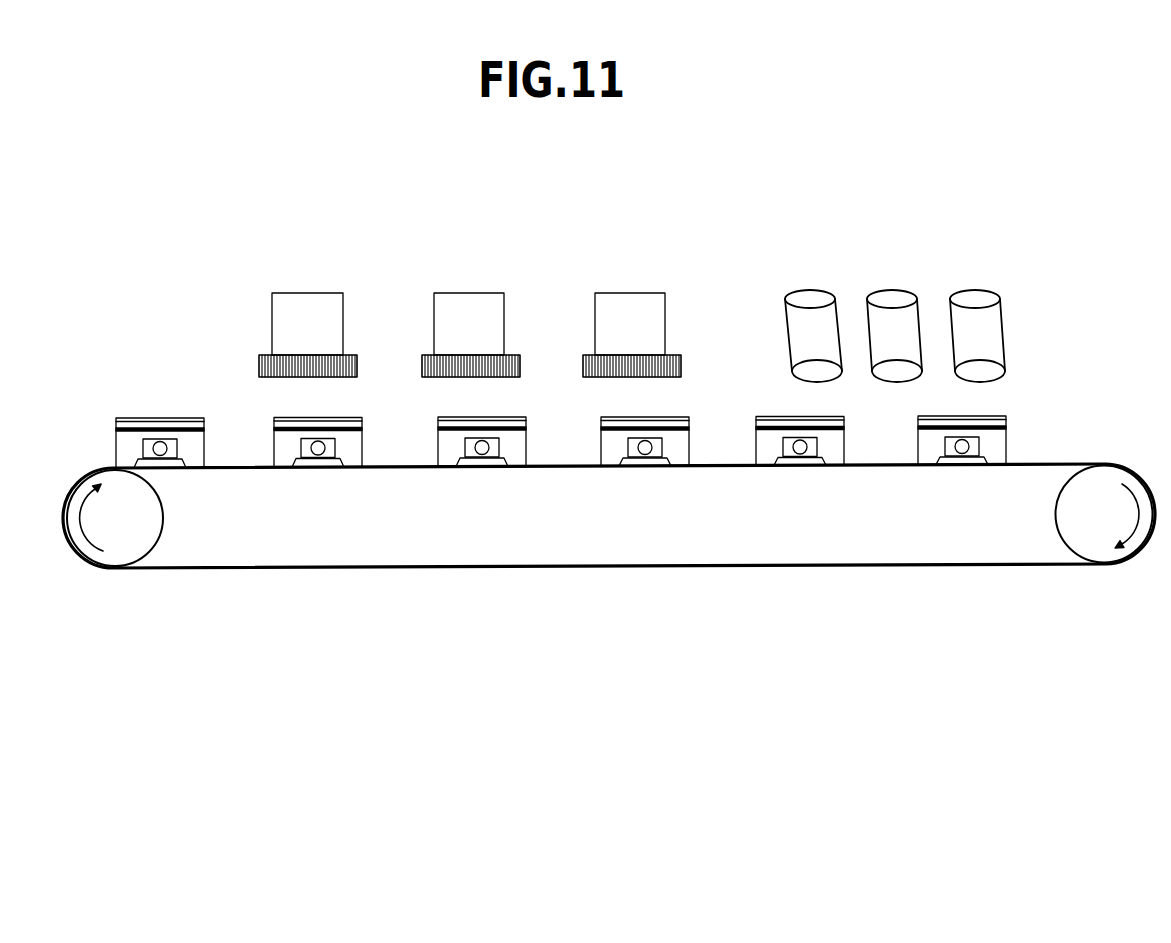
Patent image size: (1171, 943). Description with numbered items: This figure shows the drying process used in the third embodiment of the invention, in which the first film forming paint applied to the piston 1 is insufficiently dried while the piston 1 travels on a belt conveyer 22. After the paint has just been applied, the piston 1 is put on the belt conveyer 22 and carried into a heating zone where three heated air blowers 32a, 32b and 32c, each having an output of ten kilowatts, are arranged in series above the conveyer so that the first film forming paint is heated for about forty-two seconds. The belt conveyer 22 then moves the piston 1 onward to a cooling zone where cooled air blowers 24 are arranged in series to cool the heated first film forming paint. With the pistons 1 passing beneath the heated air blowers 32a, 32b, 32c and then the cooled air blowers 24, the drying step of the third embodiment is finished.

The piston 1 is at (121, 418).
The belt conveyer 22 is at (590, 608).
The cooled air blowers 24 is at (973, 290).
The heated air blower 32a is at (307, 308).
The heated air blower 32b is at (469, 308).
The heated air blower 32c is at (630, 308).